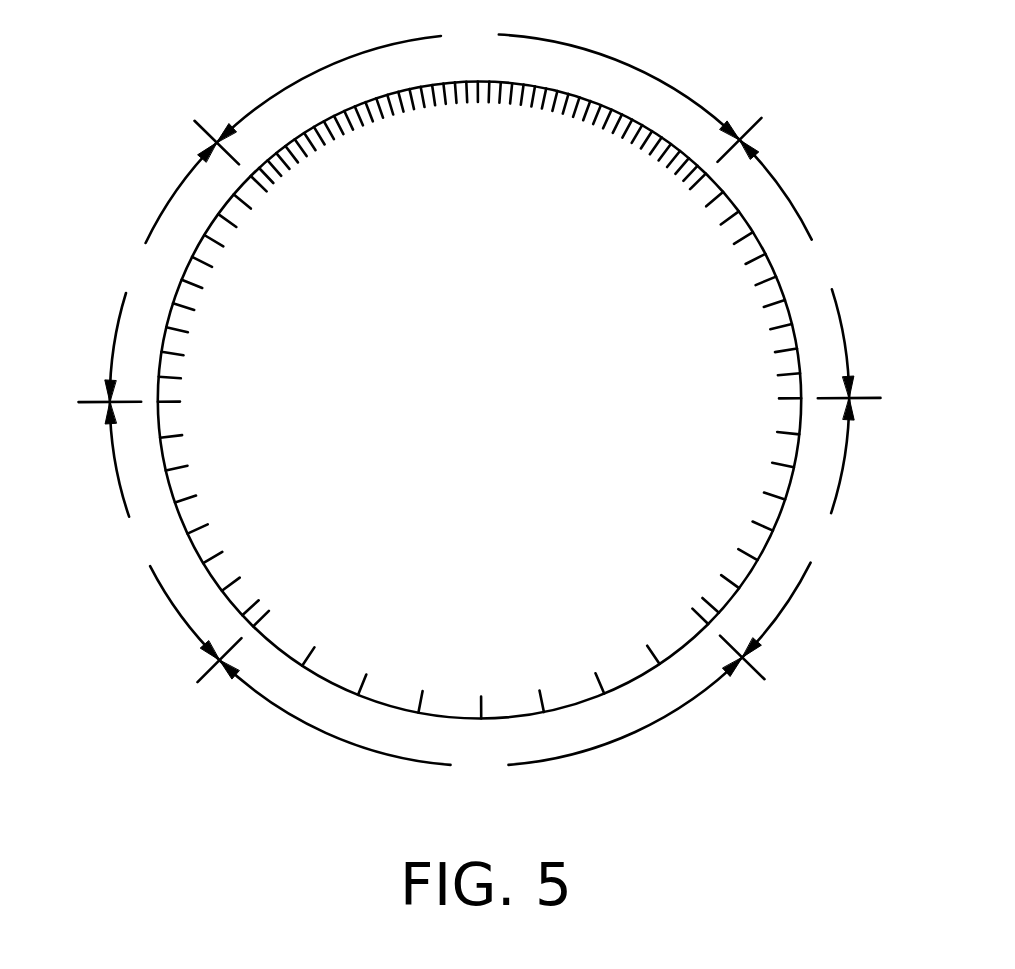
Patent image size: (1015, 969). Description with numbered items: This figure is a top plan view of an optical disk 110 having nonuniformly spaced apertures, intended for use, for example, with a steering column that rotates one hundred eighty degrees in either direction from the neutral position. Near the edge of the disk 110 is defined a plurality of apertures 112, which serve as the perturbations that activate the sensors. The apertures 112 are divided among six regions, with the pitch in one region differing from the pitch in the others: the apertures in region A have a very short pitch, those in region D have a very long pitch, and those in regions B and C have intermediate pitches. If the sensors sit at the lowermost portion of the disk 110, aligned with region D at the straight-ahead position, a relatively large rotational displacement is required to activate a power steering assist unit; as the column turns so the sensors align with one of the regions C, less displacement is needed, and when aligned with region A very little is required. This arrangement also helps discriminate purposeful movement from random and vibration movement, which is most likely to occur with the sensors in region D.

The disk 110 is at (678, 388).
The apertures 112 is at (776, 490).
The region A is at (478, 90).
The region B is at (480, 271).
The region C is at (479, 540).
The region D is at (481, 722).